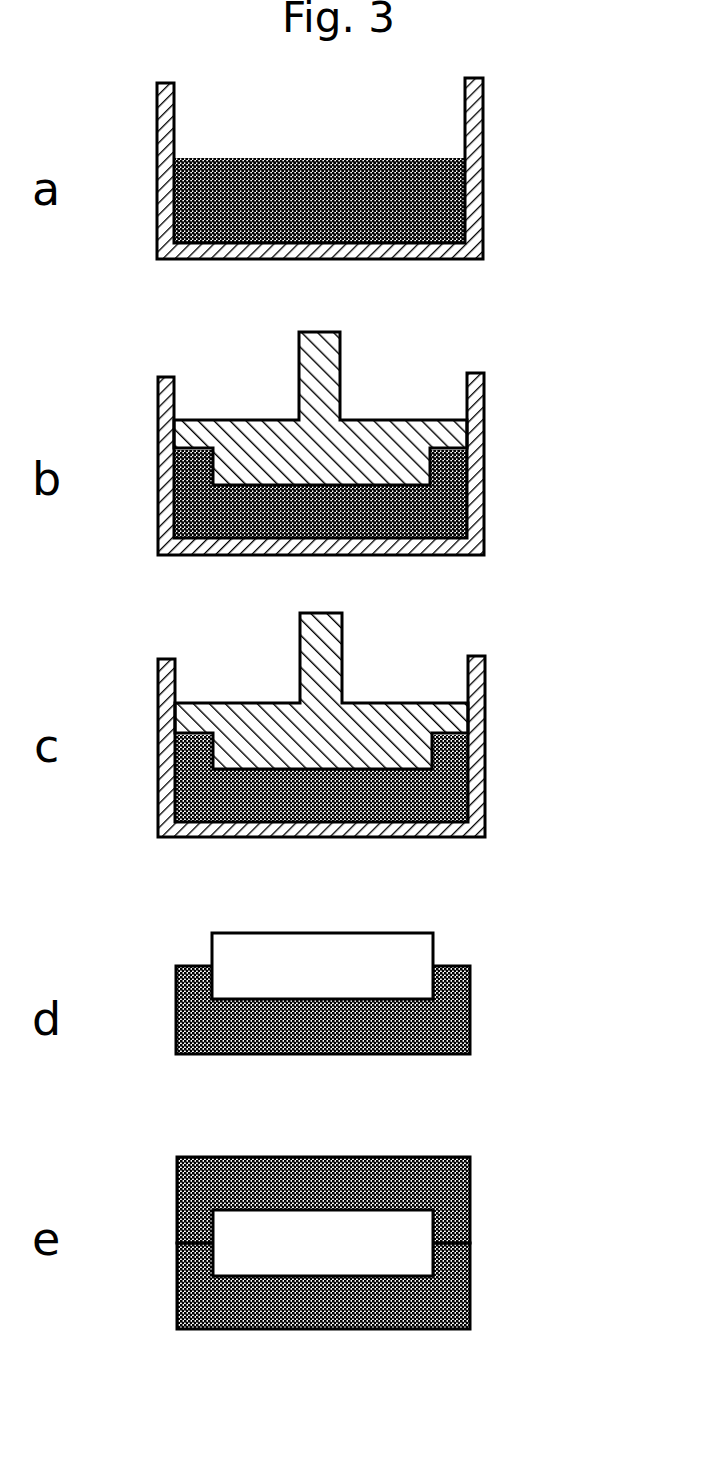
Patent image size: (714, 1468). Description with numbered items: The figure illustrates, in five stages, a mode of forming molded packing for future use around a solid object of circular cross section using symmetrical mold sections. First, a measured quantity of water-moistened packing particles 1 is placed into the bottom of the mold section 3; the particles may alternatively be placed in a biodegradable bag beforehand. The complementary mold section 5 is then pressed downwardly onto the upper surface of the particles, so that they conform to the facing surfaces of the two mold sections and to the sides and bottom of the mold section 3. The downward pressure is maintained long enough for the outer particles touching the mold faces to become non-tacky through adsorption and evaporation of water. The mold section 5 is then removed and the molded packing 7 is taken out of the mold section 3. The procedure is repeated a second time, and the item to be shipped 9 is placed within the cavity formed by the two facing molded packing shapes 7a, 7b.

In FIG. 3a, the packing particles 1 is at (432, 195).
In FIG. 3b, the packing particles 1 is at (445, 503).
In FIG. 3a, the mold section 3 is at (483, 99).
In FIG. 3b, the mold section 3 is at (484, 428).
In FIG. 3c, the mold section 3 is at (485, 780).
In FIG. 3b, the complementary mold section 5 is at (395, 442).
In FIG. 3c, the complementary mold section 5 is at (385, 712).
In FIG. 3c, the molded packing 7 is at (448, 765).
In FIG. 3d, the molded packing 7 is at (455, 1016).
In FIG. 3e, the molded packing shape 7a is at (455, 1207).
In FIG. 3e, the molded packing shape 7b is at (455, 1272).
In FIG. 3d, the item to be shipped 9 is at (413, 949).
In FIG. 3e, the item to be shipped 9 is at (397, 1222).